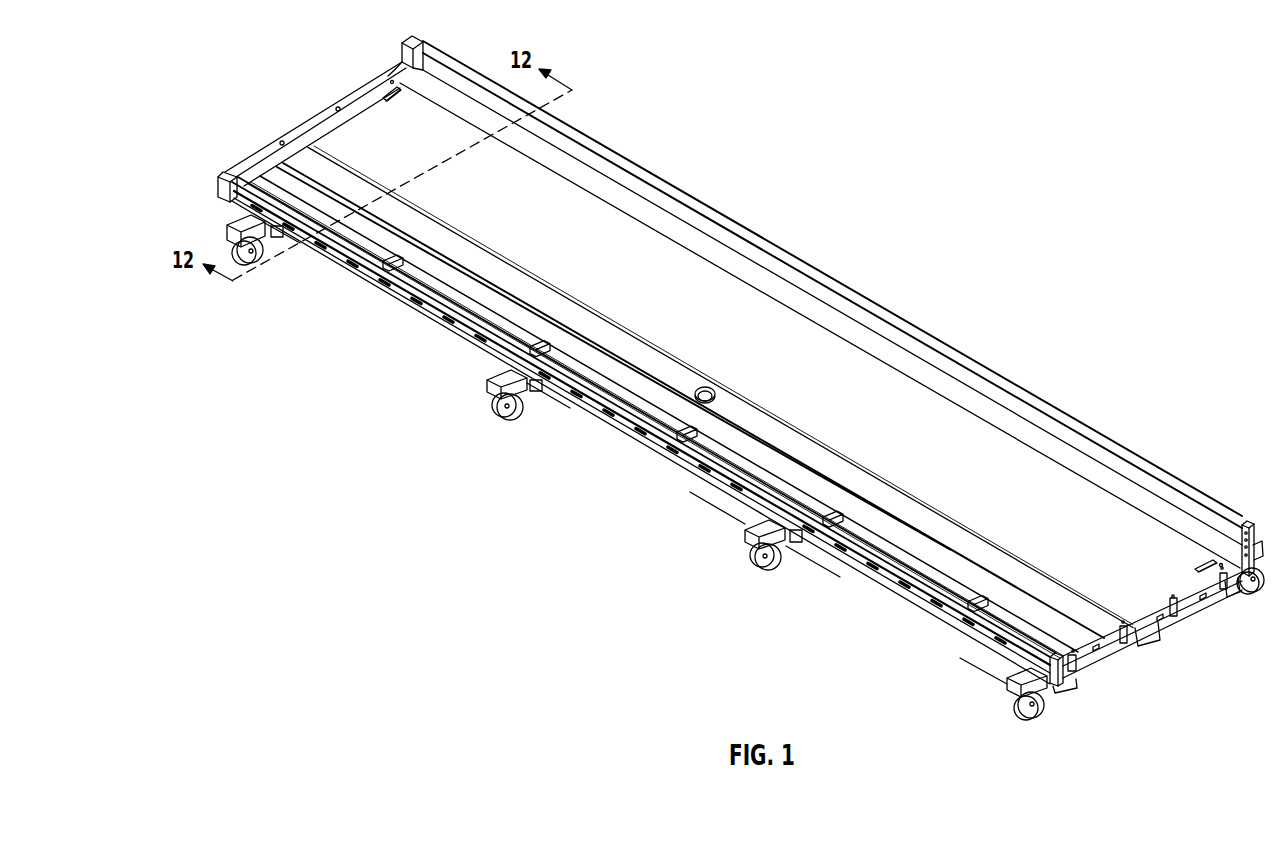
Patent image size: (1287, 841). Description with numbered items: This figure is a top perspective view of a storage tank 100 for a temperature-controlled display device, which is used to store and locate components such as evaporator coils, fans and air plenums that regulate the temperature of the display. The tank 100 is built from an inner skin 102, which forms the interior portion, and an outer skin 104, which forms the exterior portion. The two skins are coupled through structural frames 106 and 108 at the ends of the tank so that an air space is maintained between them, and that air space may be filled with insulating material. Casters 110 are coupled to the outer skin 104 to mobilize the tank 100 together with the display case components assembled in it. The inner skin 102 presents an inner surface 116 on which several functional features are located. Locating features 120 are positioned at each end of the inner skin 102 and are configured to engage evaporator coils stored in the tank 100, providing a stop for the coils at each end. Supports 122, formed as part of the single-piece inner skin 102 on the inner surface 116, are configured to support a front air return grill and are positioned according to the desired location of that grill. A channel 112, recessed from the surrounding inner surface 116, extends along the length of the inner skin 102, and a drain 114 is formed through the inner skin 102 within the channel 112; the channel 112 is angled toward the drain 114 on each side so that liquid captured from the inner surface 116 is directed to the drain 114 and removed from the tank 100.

The storage tank 100 is at (925, 151).
The inner skin 102 is at (835, 355).
The outer skin 104 is at (640, 436).
The structural frame 106 is at (333, 118).
The structural frame 108 is at (1195, 600).
The casters 110 is at (762, 525).
The channel 112 is at (945, 530).
The drain 114 is at (705, 385).
The inner surface 116 is at (612, 242).
The locating features 120 is at (387, 83).
The supports 122 is at (393, 255).